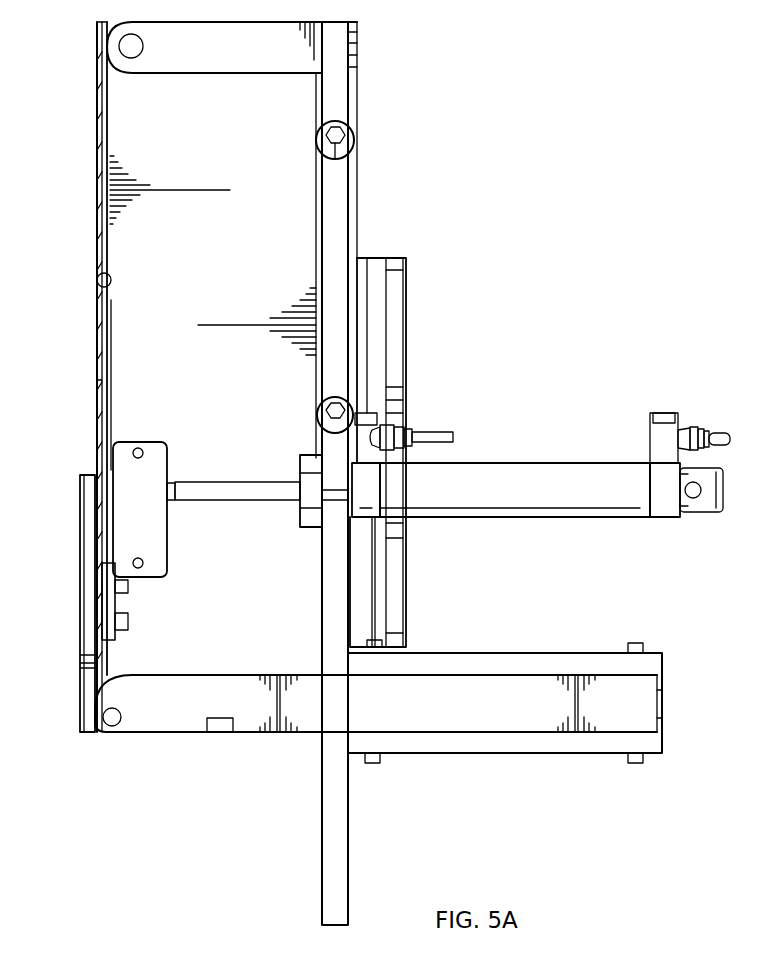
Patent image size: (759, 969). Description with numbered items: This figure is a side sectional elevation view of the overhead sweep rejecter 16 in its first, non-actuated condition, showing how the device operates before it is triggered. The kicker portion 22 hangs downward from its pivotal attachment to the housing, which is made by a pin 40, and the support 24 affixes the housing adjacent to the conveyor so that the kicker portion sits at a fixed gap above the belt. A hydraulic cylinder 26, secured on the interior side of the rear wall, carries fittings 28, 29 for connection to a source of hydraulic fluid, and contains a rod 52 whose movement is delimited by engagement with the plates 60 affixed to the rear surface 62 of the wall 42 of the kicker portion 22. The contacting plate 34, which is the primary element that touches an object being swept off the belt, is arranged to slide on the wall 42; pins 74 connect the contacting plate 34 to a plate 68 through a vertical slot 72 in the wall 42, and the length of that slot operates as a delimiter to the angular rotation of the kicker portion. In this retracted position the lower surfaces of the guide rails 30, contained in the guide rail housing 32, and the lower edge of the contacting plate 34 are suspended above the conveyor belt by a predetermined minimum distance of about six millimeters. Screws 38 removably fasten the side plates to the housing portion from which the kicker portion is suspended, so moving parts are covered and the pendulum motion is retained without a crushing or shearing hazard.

The overhead sweep rejecter 16 is at (603, 71).
The kicker portion 22 is at (97, 172).
The support 24 is at (330, 826).
The hydraulic cylinder 26 is at (530, 474).
The fitting 28 is at (713, 430).
The fitting 29 is at (433, 430).
The guide rail 30 is at (156, 735).
The guide rail housing 32 is at (504, 754).
The contacting plate 34 is at (80, 606).
The screw 38 is at (350, 140).
The pin 40 is at (146, 47).
The wall 42 is at (97, 385).
The rod 52 is at (240, 502).
The plate 60 is at (148, 442).
The rear surface 62 is at (97, 276).
The plate 68 is at (128, 586).
The vertical slot 72 is at (95, 568).
The pin 74 is at (128, 626).